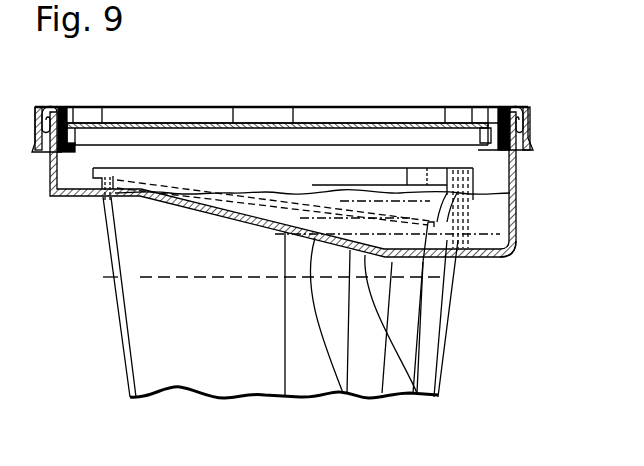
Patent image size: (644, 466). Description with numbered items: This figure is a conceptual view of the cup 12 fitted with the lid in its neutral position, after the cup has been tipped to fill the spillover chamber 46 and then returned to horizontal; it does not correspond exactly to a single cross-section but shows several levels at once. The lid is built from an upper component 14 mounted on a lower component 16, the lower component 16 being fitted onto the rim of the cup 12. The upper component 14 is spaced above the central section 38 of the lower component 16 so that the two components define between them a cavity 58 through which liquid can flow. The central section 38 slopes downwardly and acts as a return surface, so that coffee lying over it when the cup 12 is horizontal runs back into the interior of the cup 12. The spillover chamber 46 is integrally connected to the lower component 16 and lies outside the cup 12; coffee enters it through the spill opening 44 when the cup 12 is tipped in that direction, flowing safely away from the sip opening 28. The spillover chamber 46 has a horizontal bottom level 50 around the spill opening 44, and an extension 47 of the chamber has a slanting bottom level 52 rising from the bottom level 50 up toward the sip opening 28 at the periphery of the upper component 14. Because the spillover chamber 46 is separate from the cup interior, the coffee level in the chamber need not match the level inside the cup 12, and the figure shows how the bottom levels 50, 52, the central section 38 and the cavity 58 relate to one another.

The cup 12 is at (118, 330).
The upper component 14 is at (171, 124).
The lower component 16 is at (517, 172).
The sip opening 28 is at (111, 127).
The central section 38 is at (270, 196).
The spill opening 44 is at (393, 265).
The spillover chamber 46 is at (517, 244).
The extension 47 is at (347, 395).
The horizontal bottom level 50 is at (419, 256).
The slanting bottom level 52 is at (414, 395).
The cavity 58 is at (218, 146).